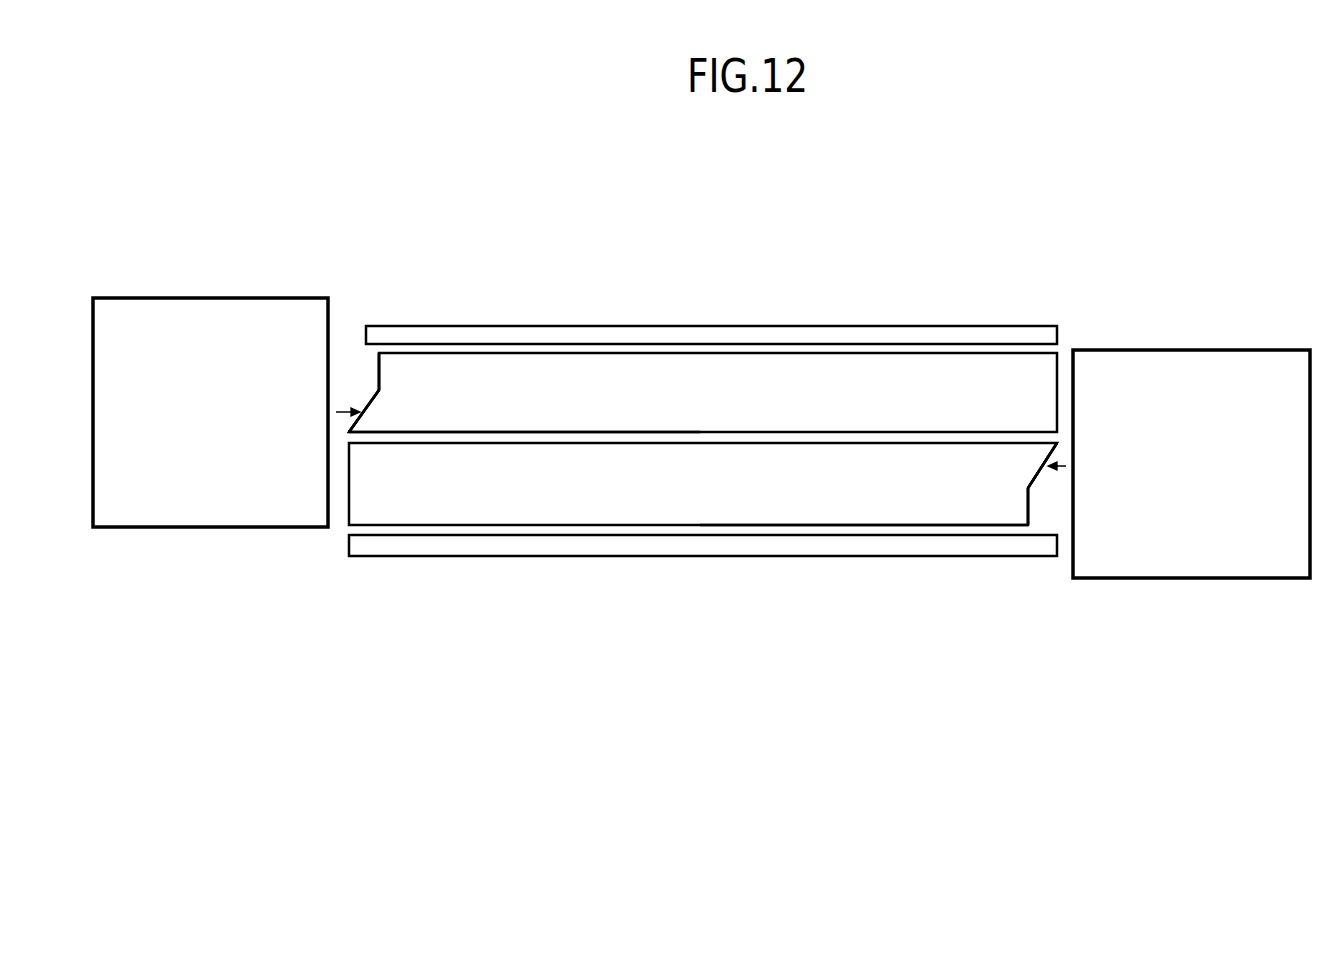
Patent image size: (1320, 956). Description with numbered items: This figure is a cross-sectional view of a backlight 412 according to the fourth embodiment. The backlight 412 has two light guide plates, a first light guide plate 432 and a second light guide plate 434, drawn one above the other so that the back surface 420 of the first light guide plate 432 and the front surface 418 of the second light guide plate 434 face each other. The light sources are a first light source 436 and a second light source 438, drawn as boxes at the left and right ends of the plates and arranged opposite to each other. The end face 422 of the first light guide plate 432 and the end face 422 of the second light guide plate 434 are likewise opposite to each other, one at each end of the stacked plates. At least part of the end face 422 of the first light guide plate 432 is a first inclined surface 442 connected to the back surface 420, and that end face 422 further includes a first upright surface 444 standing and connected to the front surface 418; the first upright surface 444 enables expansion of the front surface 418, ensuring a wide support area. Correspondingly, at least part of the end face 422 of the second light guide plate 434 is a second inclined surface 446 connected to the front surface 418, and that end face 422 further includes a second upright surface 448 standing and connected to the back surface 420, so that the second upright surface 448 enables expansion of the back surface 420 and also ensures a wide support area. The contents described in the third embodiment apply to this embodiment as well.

The backlight 412 is at (1123, 317).
The front surface 418 is at (667, 353).
The back surface 420 is at (518, 432).
The end face 422 is at (378, 233).
The first light guide plate 432 is at (528, 368).
The second light guide plate 434 is at (693, 510).
The first light source 436 is at (191, 427).
The second light source 438 is at (1168, 478).
The first inclined surface 442 is at (367, 403).
The first upright surface 444 is at (378, 367).
The second inclined surface 446 is at (1040, 477).
The second upright surface 448 is at (1028, 513).